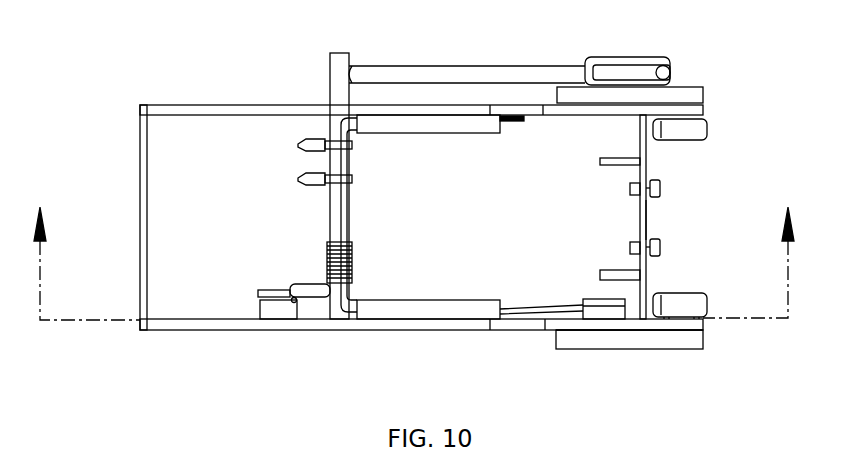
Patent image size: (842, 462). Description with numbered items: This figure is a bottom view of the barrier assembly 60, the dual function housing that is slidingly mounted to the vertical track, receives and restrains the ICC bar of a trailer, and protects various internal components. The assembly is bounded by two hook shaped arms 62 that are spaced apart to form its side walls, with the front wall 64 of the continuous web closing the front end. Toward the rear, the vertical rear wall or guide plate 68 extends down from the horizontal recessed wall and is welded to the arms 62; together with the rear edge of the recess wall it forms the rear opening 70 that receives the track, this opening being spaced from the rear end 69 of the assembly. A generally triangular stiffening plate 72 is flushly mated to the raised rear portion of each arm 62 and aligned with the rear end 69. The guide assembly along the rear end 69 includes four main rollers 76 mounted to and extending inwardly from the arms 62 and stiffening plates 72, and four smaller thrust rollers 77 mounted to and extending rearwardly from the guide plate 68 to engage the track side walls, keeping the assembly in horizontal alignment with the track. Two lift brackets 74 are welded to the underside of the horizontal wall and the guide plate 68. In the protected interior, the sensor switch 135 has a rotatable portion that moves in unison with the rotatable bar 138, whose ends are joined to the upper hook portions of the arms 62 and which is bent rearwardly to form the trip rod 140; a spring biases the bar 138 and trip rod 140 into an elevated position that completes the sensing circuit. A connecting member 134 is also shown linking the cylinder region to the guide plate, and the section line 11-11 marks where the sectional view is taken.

The section line 11- 11 is at (413, 249).
The barrier assembly 60 is at (160, 96).
The hook shaped arms 62 is at (215, 110).
The front wall 64 is at (138, 190).
The rear wall or guide plate 68 is at (648, 168).
The rear end 69 is at (705, 335).
The rear opening 70 is at (720, 242).
The stiffening plates 72 is at (697, 85).
The lift brackets 74 is at (618, 158).
The main rollers 76 is at (706, 131).
The thrust rollers 77 is at (662, 190).
The connecting rod 134 is at (533, 308).
The sensor switch 135 is at (267, 290).
The rotatable bar 138 is at (332, 80).
The trip rod 140 is at (482, 72).